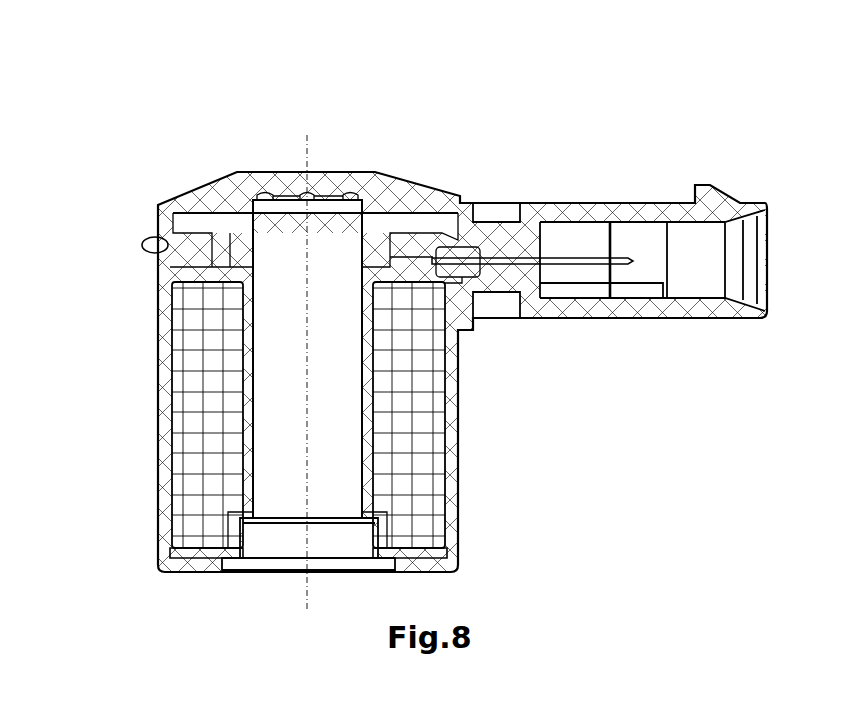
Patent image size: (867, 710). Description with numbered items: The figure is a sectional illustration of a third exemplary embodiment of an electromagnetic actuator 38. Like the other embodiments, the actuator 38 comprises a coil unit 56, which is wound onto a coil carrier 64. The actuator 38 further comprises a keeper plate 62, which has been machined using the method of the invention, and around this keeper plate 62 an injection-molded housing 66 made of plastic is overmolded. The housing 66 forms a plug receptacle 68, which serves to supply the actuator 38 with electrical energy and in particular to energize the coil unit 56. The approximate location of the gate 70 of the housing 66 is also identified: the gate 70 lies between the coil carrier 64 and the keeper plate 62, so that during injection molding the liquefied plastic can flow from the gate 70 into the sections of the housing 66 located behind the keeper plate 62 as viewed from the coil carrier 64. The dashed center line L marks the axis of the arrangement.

The actuator 38 is at (95, 75).
The coil unit 56 is at (418, 398).
The keeper plate 62 is at (157, 212).
The coil carrier 64 is at (250, 331).
The housing 66 is at (368, 190).
The plug receptacle 68 is at (673, 143).
The gate 70 is at (142, 248).
The longitudinal axis L is at (305, 145).